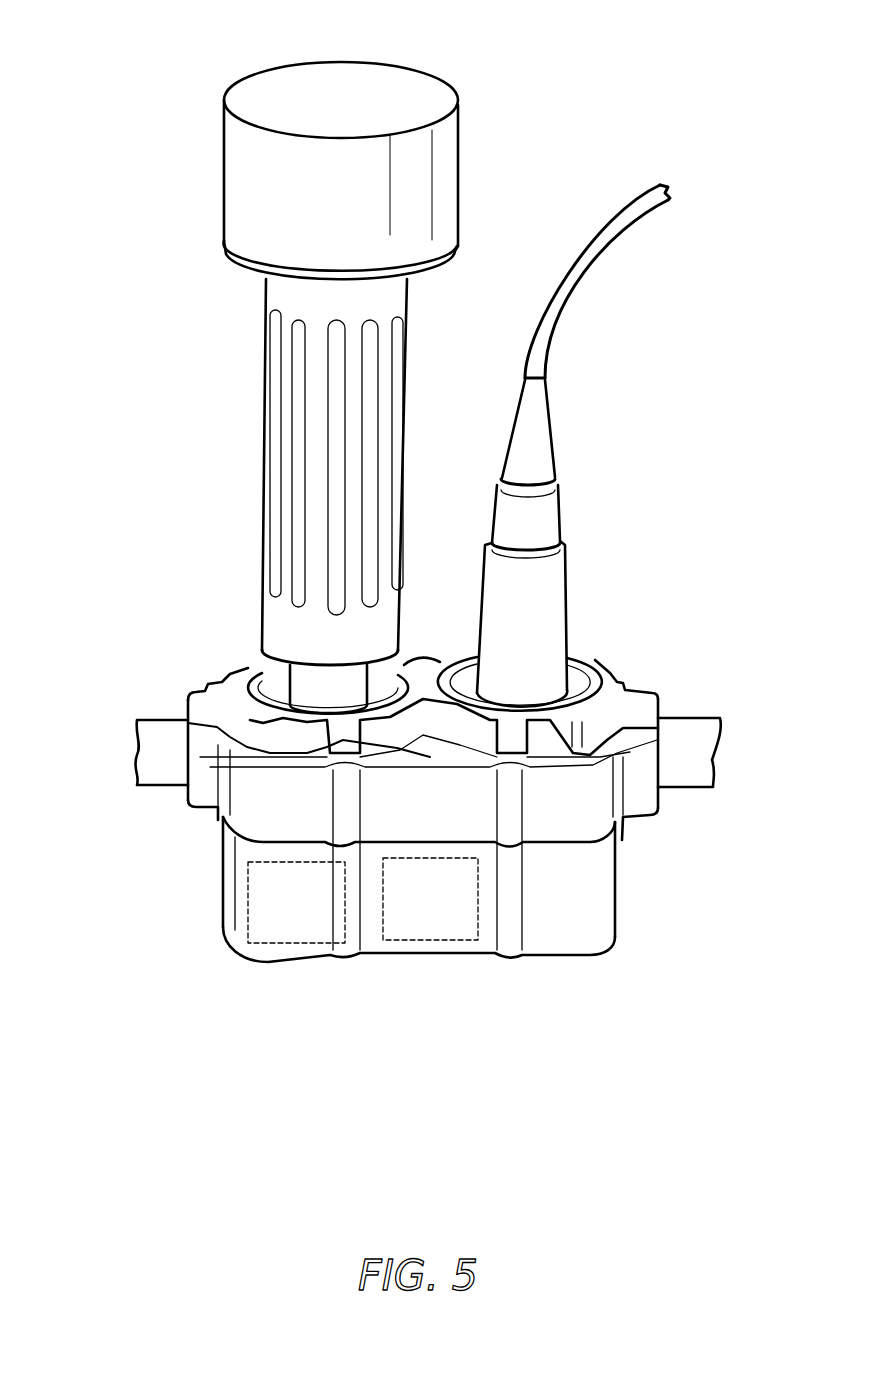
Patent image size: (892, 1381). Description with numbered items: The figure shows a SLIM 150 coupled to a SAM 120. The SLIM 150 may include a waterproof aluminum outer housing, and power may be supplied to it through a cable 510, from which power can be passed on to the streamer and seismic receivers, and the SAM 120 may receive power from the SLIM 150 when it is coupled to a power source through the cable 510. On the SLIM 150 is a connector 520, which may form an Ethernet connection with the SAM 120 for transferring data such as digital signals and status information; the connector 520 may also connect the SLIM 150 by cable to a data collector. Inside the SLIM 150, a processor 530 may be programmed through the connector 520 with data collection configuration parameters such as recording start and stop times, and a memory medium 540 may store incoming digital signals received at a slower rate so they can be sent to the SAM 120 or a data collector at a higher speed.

The SAM 120 is at (443, 62).
The SLIM 150 is at (197, 692).
The cable 510 is at (542, 427).
The connector 520 is at (287, 703).
The processor 530 is at (307, 935).
The memory medium 540 is at (432, 940).